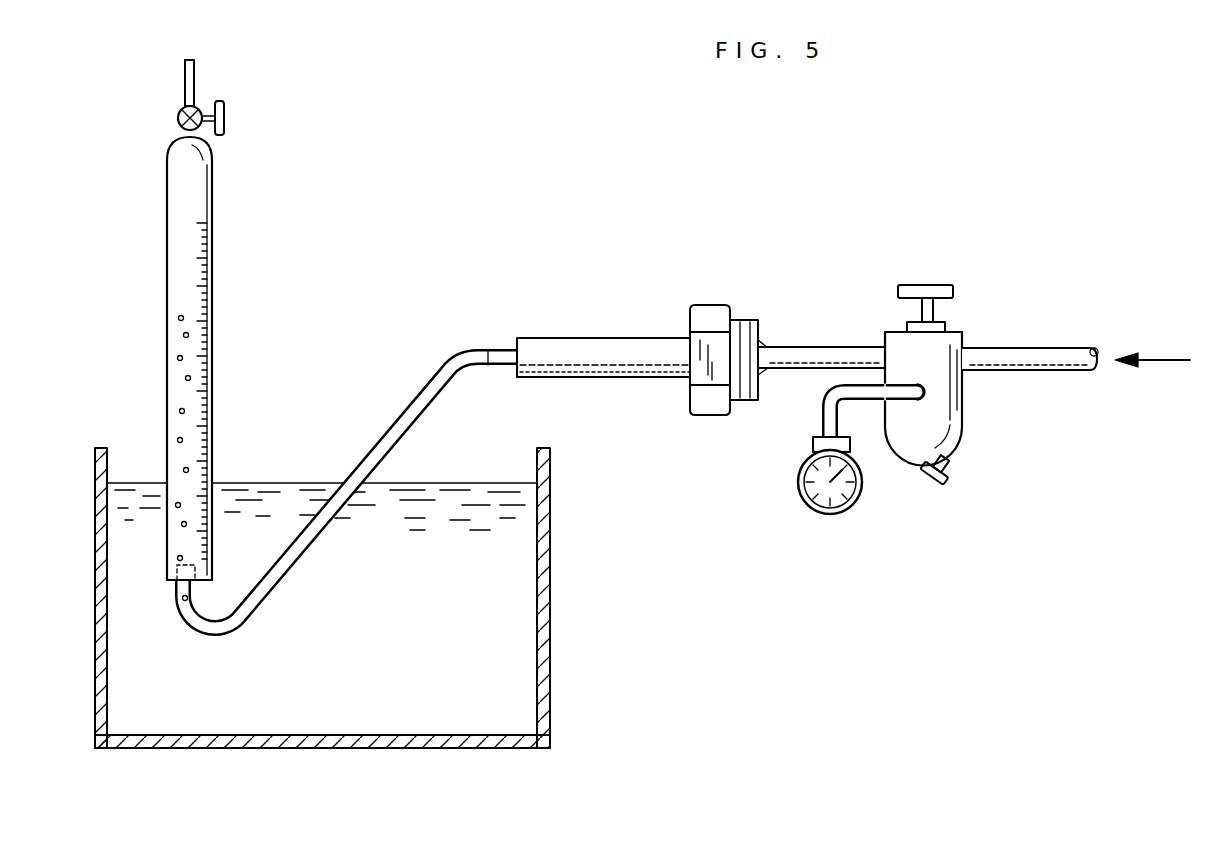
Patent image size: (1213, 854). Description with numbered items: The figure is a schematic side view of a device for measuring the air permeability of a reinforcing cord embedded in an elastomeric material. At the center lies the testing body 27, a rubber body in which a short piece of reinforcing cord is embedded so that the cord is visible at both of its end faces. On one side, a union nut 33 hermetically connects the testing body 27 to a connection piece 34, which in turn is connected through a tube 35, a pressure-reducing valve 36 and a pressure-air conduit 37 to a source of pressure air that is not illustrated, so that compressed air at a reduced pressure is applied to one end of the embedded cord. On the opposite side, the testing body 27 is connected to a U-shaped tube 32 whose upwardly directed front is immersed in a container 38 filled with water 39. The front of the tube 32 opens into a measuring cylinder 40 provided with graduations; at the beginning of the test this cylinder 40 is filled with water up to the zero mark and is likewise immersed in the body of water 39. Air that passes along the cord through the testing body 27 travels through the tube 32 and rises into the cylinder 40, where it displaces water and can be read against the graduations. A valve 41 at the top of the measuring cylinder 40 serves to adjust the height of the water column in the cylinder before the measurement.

The testing body 27 is at (557, 353).
The U-shaped tube 32 is at (448, 362).
The union nut 33 is at (710, 315).
The connection piece 34 is at (748, 328).
The tube 35 is at (832, 352).
The pressure-reducing valve 36 is at (963, 410).
The pressure-air conduit 37 is at (1040, 355).
The container 38 is at (550, 608).
The water 39 is at (520, 673).
The measuring cylinder 40 is at (208, 287).
The valve 41 is at (200, 103).